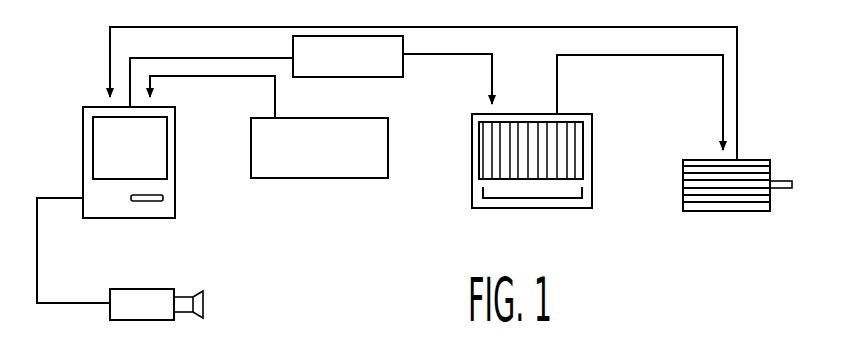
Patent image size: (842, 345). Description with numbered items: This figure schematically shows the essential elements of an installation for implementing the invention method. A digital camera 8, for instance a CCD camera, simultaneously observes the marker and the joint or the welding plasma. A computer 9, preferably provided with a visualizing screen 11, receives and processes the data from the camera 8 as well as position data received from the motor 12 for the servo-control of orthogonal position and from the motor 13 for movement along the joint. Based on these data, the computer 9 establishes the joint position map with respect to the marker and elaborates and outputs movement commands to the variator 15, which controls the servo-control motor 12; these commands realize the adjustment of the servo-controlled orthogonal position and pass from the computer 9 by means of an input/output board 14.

The digital camera 8 is at (163, 287).
The computer 9 is at (175, 198).
The visualizing screen 11 is at (153, 152).
The servo-control motor 12 is at (757, 160).
The motor for movement along the joint 13 is at (342, 155).
The input/output board 14 is at (375, 63).
The variator 15 is at (581, 158).